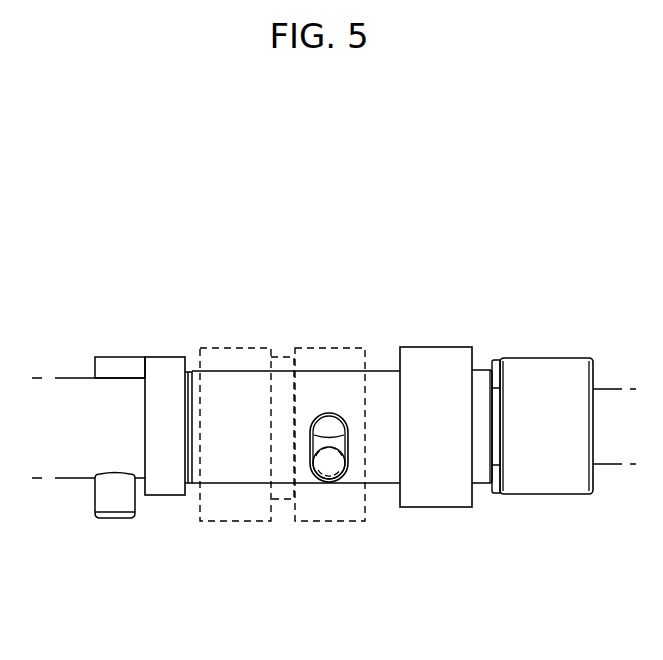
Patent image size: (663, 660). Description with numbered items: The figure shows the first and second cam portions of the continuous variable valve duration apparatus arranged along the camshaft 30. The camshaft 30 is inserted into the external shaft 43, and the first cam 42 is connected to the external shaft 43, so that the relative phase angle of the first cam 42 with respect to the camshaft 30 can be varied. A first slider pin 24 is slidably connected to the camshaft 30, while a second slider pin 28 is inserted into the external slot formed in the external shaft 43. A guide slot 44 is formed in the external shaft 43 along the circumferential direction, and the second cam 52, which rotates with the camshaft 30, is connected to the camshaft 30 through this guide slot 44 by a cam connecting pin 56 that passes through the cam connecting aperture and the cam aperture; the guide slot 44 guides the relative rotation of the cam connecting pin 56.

The first slider pin 24 is at (117, 507).
The second slider pin 28 is at (115, 370).
The camshaft 30 is at (608, 397).
The first cam 42 is at (435, 500).
The external shaft 43 is at (175, 488).
The guide slot 44 is at (333, 425).
The second cam 52 is at (243, 522).
The cam connecting pin 56 is at (328, 460).